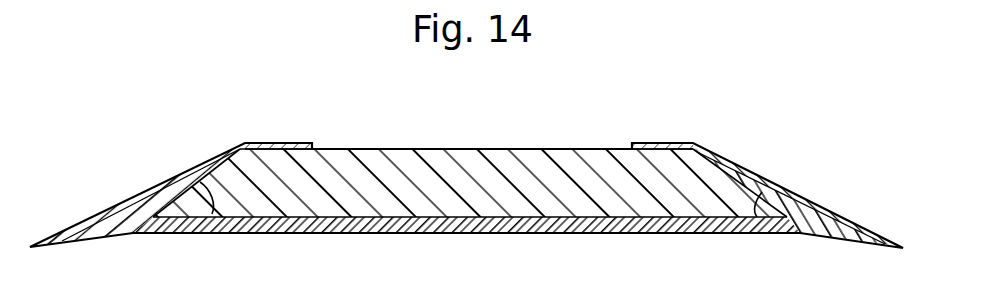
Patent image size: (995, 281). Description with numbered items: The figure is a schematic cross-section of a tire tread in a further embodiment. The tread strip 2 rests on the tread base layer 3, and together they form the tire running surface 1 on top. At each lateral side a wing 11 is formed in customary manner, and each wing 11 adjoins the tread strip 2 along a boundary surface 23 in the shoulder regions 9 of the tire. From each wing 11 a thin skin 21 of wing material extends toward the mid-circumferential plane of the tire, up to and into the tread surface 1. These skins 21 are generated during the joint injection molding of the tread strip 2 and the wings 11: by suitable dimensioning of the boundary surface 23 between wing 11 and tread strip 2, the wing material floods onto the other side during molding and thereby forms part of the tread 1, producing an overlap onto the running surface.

The tire running surface 1 is at (427, 149).
The tread strip 2 is at (512, 172).
The tread base layer 3 is at (490, 217).
The shoulder regions 9 is at (318, 132).
The wings 11 is at (164, 188).
The skin 21 is at (272, 143).
The boundary surface 23 is at (200, 233).